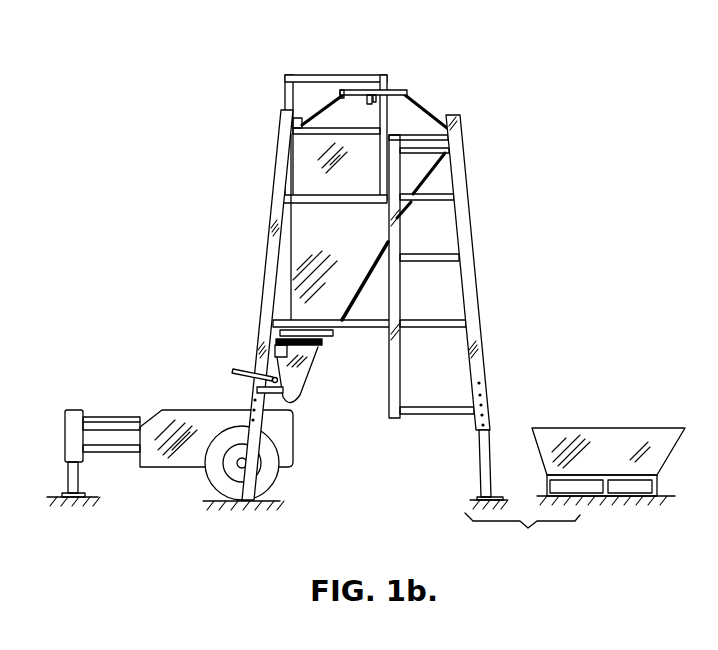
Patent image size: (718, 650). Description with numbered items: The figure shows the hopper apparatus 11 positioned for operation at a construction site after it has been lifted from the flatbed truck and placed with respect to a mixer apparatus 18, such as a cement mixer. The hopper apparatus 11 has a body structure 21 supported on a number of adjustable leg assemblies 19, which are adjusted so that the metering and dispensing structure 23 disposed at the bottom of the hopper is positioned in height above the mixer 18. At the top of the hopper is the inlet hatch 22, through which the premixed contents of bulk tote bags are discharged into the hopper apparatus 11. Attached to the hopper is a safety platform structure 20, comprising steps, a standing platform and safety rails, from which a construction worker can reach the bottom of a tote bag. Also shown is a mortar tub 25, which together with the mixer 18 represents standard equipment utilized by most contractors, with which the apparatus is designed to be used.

The hopper apparatus 11 is at (450, 75).
The mixer apparatus 18 is at (180, 405).
The adjustable leg assemblies 19 is at (485, 338).
The safety platform structure 20 is at (282, 101).
The body structure 21 is at (367, 266).
The inlet hatch 22 is at (407, 93).
The metering and dispensing structure 23 is at (297, 404).
The mortar tub 25 is at (626, 423).